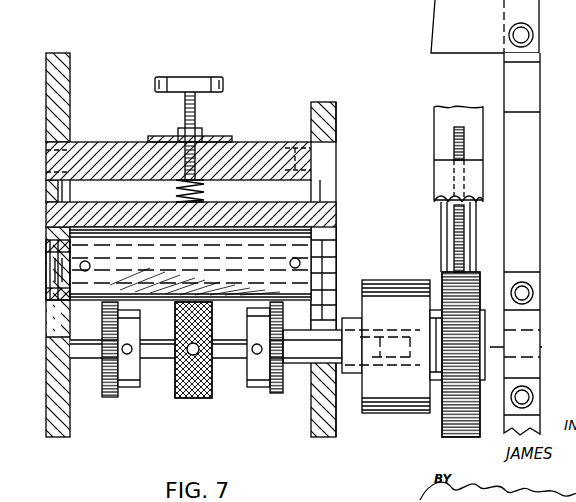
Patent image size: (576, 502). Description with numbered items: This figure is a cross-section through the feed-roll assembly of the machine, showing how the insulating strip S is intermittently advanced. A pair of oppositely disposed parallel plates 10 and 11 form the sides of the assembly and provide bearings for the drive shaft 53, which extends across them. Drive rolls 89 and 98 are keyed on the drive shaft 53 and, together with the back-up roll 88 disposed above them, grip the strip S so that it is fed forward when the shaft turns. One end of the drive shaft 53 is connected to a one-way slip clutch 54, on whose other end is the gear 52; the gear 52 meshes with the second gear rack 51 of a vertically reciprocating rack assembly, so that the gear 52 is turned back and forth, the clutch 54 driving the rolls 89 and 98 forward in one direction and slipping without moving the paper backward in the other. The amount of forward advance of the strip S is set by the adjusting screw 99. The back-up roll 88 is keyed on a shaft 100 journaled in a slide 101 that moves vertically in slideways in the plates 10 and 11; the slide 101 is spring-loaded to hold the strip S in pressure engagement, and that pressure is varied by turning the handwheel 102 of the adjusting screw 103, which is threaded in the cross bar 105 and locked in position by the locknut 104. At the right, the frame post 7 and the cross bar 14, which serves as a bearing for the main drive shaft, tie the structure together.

The upstanding post 7 is at (543, 202).
The parallel plate 10 is at (313, 425).
The parallel plate 11 is at (70, 432).
The cross bar 14 is at (438, 18).
The second gear rack 51 is at (446, 432).
The gear 52 is at (440, 410).
The drive shaft 53 is at (302, 364).
The one-way slip clutch 54 is at (384, 280).
The back-up roll 88 is at (75, 245).
The drive roll 89 is at (134, 388).
The drive roll 98 is at (200, 398).
The adjusting screw 99 is at (452, 143).
The shaft 100 is at (324, 262).
The slide 101 is at (334, 212).
The handwheel 102 is at (224, 84).
The adjusting screw 103 is at (196, 122).
The locknut 104 is at (180, 133).
The cross bar 105 is at (254, 142).
The insulating strip S is at (248, 300).